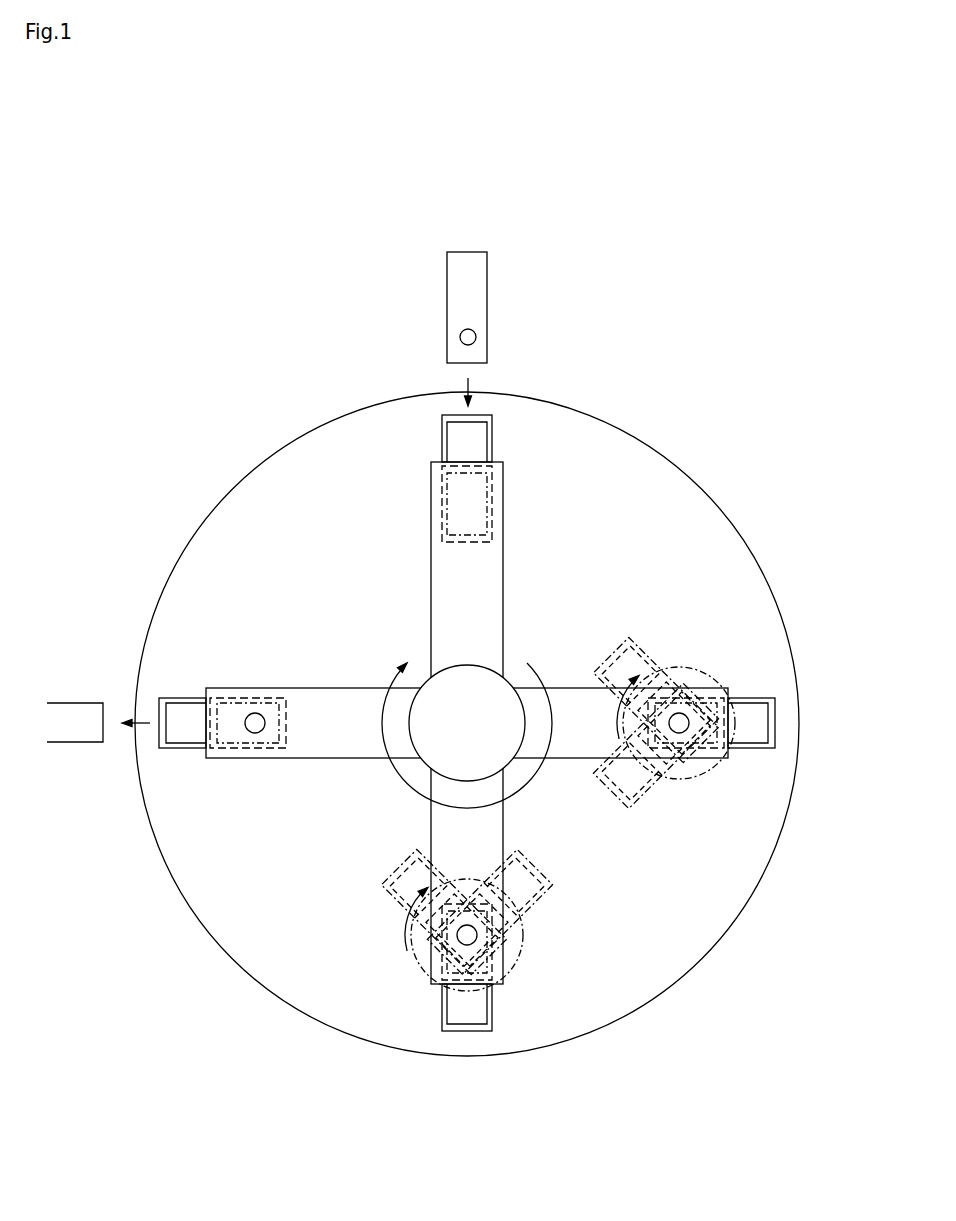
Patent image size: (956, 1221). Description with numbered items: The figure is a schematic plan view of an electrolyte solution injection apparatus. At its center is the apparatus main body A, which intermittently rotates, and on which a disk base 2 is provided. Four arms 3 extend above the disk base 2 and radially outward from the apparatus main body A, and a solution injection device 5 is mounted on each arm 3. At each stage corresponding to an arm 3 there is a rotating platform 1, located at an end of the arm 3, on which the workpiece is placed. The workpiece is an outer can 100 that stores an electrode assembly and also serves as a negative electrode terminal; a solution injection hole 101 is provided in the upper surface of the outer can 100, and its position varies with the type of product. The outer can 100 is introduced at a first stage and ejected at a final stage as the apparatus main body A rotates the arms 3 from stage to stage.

The rotating platform 1 is at (773, 730).
The disk base 2 is at (653, 497).
The arm 3 is at (587, 717).
The solution injection device 5 is at (680, 713).
The outer can 100 is at (508, 279).
The solution injection hole 101 is at (477, 335).
The apparatus main body A is at (401, 644).